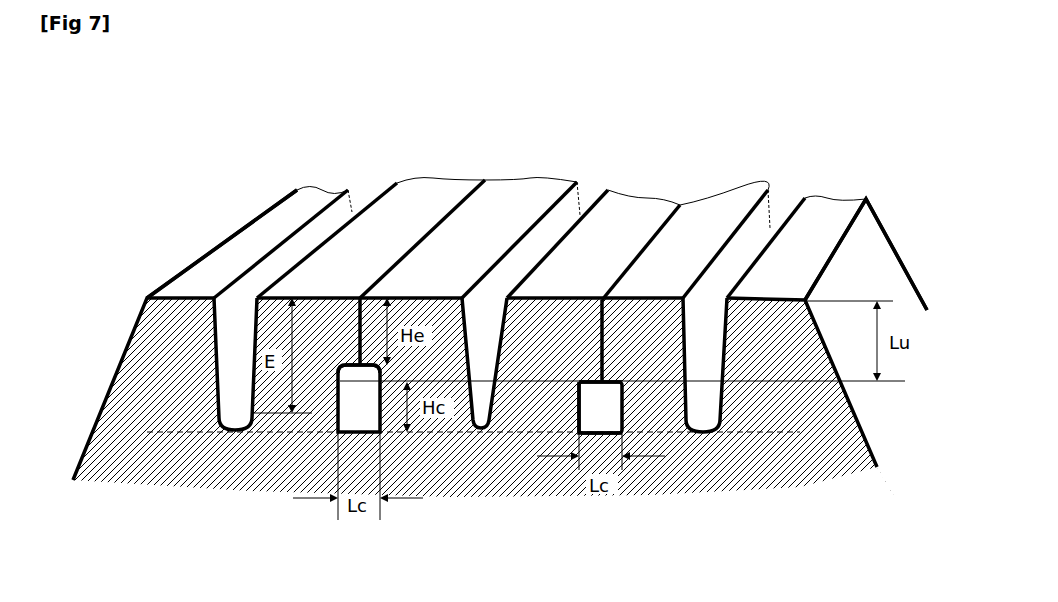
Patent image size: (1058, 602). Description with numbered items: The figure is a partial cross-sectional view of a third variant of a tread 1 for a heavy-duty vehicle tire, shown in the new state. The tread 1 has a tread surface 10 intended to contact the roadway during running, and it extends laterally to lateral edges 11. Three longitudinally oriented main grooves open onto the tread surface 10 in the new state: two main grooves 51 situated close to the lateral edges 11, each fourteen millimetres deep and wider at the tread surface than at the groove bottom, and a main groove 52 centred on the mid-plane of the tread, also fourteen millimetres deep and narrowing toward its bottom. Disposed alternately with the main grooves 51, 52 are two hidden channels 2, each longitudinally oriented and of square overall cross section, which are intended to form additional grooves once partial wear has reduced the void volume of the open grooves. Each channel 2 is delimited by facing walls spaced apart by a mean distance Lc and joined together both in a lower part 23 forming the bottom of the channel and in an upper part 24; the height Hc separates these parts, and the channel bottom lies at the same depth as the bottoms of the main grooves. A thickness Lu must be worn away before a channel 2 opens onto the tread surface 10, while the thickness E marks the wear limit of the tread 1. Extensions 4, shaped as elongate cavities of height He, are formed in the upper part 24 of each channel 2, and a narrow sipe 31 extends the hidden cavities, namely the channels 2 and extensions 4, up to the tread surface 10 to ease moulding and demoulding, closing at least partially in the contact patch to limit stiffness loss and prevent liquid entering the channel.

The tread 1 is at (109, 288).
The channel 2 is at (360, 408).
The extension 4 is at (347, 362).
The tread surface 10 is at (413, 196).
The lateral edge 11 is at (203, 253).
The lower part 23 is at (578, 436).
The upper part 24 is at (598, 380).
The sipe 31 is at (400, 262).
The main groove 51 is at (265, 270).
The main groove 52 is at (572, 212).